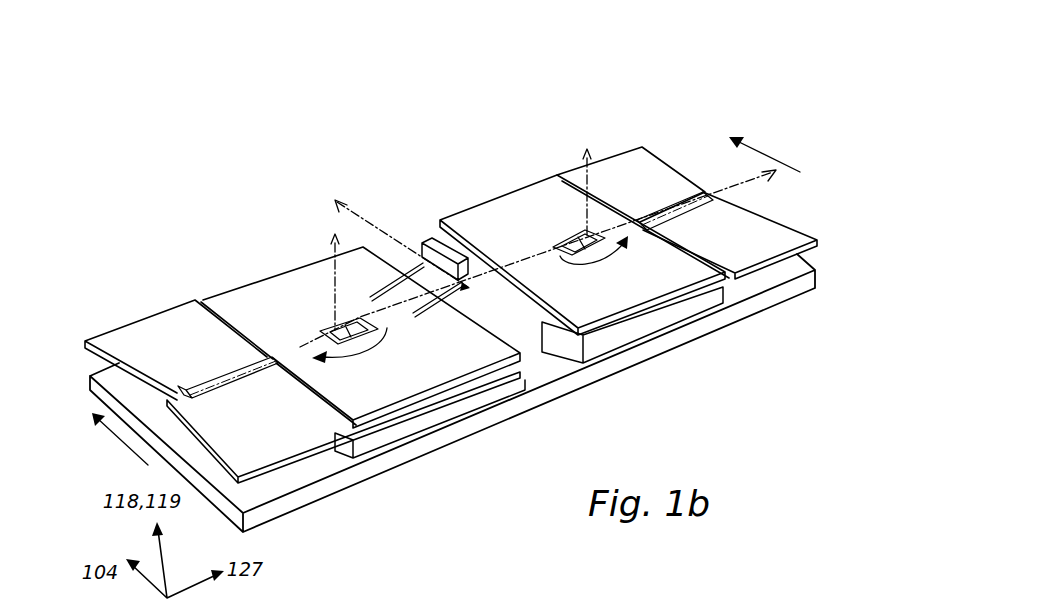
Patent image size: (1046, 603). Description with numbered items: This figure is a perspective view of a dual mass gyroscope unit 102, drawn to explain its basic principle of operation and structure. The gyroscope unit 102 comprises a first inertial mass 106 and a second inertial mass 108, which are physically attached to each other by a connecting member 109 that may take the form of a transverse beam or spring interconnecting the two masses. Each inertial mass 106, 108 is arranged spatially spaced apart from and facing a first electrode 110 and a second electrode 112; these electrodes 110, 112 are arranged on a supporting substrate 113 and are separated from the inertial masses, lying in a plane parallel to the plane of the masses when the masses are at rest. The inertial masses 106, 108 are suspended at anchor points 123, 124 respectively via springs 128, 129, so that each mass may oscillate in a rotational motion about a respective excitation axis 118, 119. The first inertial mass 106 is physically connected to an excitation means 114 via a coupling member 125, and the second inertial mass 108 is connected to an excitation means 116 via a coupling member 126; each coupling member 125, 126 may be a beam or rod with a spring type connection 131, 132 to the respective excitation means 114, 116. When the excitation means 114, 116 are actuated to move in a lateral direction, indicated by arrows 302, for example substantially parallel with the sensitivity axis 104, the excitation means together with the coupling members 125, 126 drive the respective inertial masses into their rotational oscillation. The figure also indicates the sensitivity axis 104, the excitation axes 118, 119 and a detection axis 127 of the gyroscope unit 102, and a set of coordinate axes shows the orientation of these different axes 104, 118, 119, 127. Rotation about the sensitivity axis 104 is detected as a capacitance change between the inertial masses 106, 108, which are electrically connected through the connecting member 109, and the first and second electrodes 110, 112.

The gyroscope unit 102 is at (738, 67).
The sensitivity axis 104 is at (370, 225).
The first inertial mass 106 is at (512, 215).
The second inertial mass 108 is at (275, 290).
The connecting member 109 is at (465, 284).
The first electrode 110 is at (440, 252).
The second electrode 112 is at (660, 327).
The supporting substrate 113 is at (727, 320).
The excitation means 114 is at (633, 175).
The excitation means 116 is at (157, 332).
The excitation axis 118 is at (585, 158).
The excitation axis 119 is at (335, 243).
The anchor point 123 is at (332, 328).
The anchor point 124 is at (597, 240).
The coupling member 125 is at (700, 203).
The coupling member 126 is at (241, 378).
The detection axis 127 is at (740, 183).
The spring 128 is at (358, 322).
The spring 129 is at (572, 250).
The spring type connection 131 is at (716, 208).
The spring type connection 132 is at (187, 392).
The arrows 302 is at (776, 157).